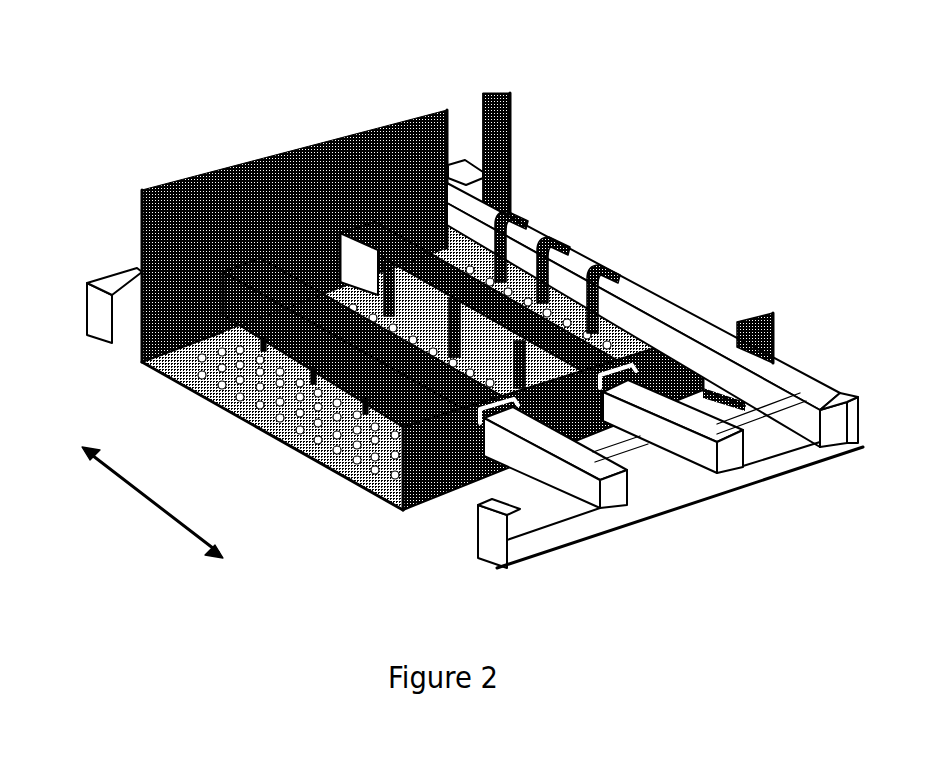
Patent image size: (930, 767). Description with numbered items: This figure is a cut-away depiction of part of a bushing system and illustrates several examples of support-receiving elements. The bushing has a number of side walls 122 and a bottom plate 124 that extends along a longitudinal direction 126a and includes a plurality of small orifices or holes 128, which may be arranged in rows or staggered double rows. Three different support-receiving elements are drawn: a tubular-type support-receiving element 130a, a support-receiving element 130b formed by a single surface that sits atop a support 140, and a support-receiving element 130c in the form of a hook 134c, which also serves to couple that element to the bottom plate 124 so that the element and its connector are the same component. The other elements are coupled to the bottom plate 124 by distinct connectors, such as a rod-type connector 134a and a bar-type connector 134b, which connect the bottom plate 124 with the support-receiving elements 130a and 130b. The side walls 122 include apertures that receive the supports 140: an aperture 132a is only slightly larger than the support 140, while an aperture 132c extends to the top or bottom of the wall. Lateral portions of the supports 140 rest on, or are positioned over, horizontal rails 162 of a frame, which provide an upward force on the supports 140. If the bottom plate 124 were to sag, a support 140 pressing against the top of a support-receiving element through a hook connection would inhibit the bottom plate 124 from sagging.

The side wall 122 is at (155, 232).
The bottom plate 124 is at (190, 362).
The longitudinal direction 126a is at (152, 502).
The holes 128 is at (358, 438).
The support-receiving element 130a is at (293, 328).
The support-receiving element 130b is at (373, 220).
The support-receiving element 130c is at (518, 212).
The aperture 132a is at (482, 458).
The aperture 132c is at (465, 120).
The connector 134a is at (313, 373).
The connector 134b is at (378, 270).
The hook 134c is at (553, 238).
The support 140 is at (532, 437).
The horizontal rails 162 is at (637, 460).